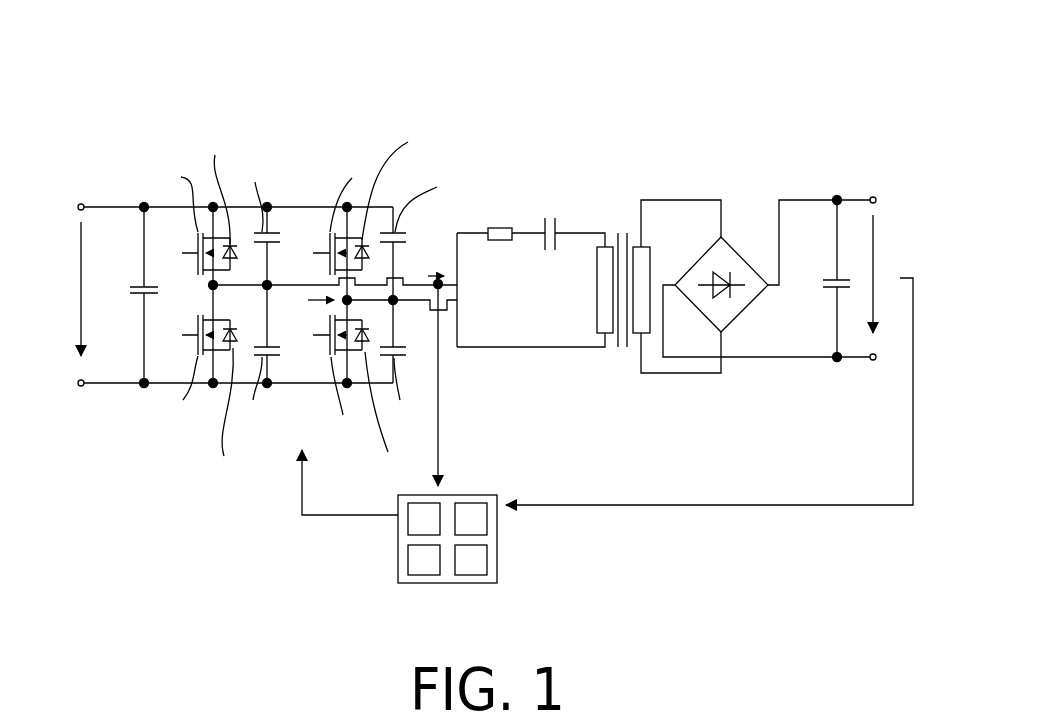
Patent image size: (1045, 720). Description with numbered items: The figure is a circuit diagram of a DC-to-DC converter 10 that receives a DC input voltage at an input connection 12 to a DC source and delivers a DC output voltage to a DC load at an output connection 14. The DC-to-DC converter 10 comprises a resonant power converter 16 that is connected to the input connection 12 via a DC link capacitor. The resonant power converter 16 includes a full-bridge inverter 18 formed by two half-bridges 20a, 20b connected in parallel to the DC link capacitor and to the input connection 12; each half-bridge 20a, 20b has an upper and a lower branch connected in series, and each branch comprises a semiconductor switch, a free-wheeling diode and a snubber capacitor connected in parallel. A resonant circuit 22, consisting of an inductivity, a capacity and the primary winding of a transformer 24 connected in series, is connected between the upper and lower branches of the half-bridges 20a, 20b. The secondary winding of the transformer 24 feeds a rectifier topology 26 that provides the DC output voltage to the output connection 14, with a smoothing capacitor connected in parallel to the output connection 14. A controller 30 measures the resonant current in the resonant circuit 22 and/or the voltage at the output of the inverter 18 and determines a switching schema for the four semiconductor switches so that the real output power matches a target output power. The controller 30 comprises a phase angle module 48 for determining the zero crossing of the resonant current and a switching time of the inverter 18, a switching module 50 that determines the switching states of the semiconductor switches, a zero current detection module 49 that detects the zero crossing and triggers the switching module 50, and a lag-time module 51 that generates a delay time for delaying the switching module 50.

The DC-to-DC converter 10 is at (182, 62).
The input connection 12 is at (92, 115).
The output connection 14 is at (896, 134).
The resonant power converter 16 is at (257, 516).
The full-bridge inverter 18 is at (294, 95).
The half-bridge 20a is at (241, 115).
The half-bridge 20b is at (357, 113).
The resonant circuit 22 is at (536, 115).
The transformer 24 is at (644, 144).
The rectifier topology 26 is at (746, 119).
The controller 30 is at (448, 583).
The phase angle module 48 is at (497, 520).
The zero current detection module 49 is at (398, 565).
The switching module 50 is at (398, 520).
The lag-time module 51 is at (497, 565).